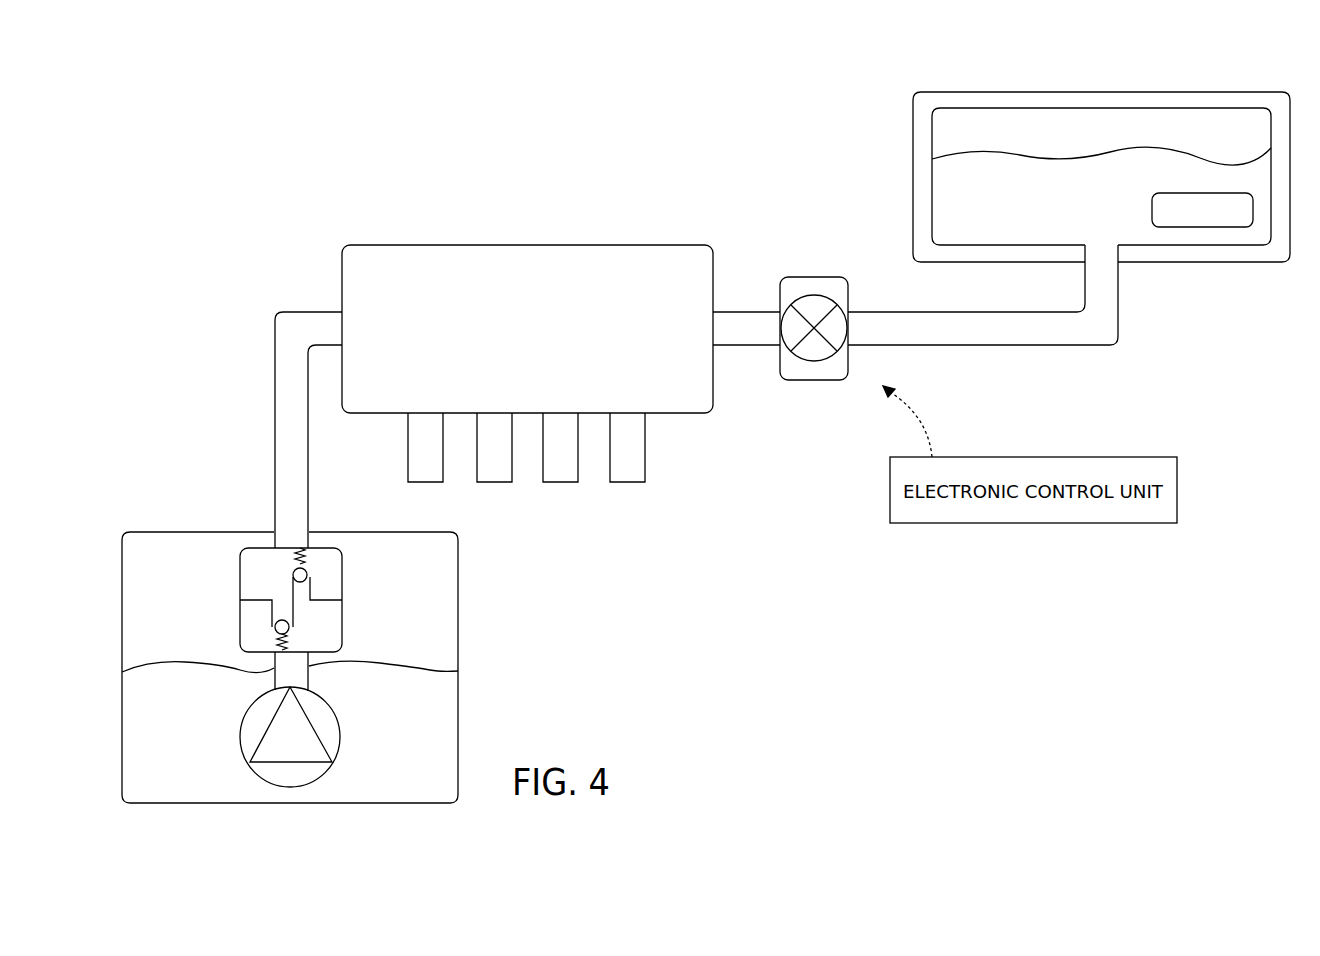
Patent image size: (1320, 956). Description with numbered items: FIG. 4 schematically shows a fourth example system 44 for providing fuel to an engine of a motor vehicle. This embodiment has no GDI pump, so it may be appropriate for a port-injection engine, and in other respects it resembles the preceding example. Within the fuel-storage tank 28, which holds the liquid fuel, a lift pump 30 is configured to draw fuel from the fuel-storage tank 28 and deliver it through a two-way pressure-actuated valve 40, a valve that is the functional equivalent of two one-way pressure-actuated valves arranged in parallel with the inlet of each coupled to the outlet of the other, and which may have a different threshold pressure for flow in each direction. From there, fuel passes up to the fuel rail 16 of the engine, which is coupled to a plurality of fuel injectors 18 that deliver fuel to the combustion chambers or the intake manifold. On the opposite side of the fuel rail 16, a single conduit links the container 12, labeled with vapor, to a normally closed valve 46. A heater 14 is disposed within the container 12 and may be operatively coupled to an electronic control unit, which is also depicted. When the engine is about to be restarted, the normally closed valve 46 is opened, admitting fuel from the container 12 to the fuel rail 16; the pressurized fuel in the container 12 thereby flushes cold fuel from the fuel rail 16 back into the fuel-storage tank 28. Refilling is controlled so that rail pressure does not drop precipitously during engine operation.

The container 12 is at (1253, 262).
The heater 14 is at (1192, 223).
The fuel rail 16 is at (517, 340).
The fuel injectors 18 is at (678, 447).
The fuel-storage tank 28 is at (155, 532).
The lift pump 30 is at (340, 735).
The two-way pressure-actuated valve 40 is at (342, 600).
The fourth example system 44 is at (813, 650).
The normally closed valve 46 is at (816, 277).